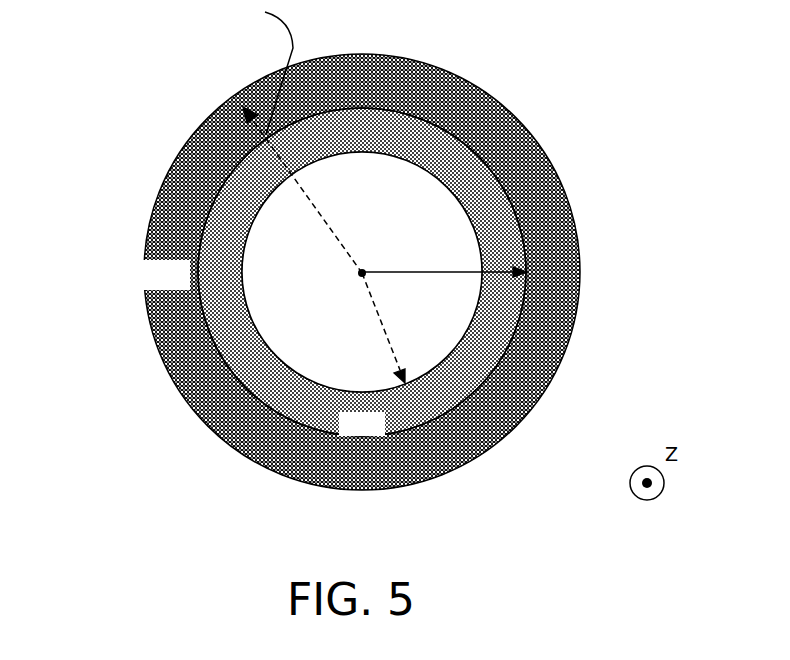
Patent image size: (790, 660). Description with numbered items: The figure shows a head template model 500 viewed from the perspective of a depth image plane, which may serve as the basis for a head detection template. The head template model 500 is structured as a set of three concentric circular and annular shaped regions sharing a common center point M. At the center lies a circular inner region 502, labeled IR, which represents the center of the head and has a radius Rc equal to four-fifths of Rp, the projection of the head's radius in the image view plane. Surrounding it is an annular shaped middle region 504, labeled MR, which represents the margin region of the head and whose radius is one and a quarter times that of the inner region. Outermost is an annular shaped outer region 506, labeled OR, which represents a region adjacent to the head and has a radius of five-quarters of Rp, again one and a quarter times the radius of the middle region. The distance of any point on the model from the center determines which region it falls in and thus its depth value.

The head template model 500 is at (317, 272).
The circular inner region 502 is at (286, 347).
The annular shaped middle region 504 is at (231, 352).
The annular shaped outer region 506 is at (165, 335).